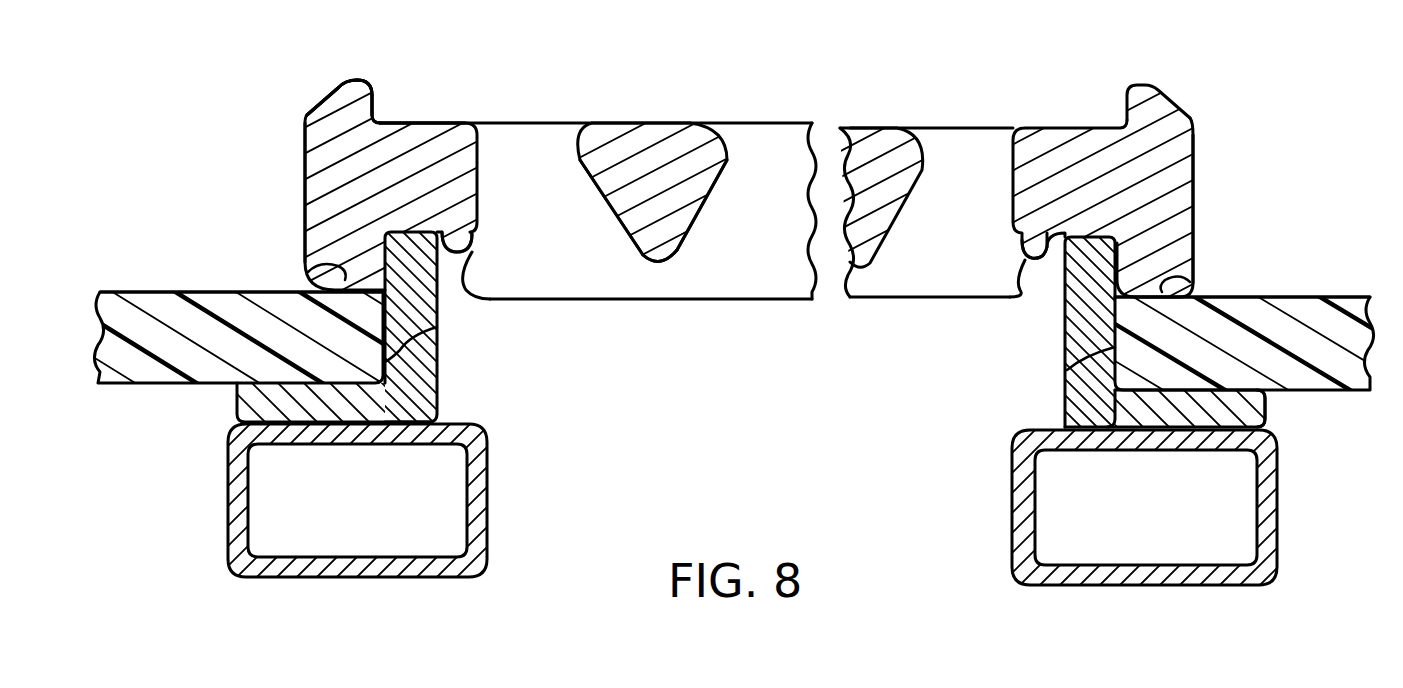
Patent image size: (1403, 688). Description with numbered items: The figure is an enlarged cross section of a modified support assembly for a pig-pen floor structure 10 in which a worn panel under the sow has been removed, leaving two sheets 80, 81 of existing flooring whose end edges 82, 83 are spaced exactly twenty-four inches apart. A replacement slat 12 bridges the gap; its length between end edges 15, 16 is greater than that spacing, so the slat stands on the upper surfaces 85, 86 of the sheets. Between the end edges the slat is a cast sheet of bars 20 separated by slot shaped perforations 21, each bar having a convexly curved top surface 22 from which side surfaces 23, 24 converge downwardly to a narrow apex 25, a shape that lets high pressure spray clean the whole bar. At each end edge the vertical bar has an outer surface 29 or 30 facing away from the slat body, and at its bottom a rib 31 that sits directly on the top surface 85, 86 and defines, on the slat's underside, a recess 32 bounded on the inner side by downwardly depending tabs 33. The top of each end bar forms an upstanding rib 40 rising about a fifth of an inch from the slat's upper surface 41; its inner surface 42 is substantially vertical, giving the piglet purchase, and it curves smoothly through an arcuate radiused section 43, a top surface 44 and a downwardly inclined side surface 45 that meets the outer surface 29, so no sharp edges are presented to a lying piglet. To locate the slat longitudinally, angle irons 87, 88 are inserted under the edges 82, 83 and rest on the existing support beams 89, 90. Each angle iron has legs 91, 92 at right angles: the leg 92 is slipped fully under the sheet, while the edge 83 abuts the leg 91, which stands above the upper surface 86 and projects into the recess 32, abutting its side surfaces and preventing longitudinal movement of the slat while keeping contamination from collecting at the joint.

The floor structure 10 is at (1158, 227).
The slat 12 is at (909, 110).
The end edge 15 is at (298, 193).
The end edge 16 is at (1200, 210).
The bar 20 is at (643, 114).
The slot shaped perforation 21 is at (522, 142).
The top surface 22 is at (657, 122).
The side surface 23 is at (597, 210).
The side surface 24 is at (722, 204).
The apex 25 is at (665, 268).
The outer surface 29 is at (300, 155).
The surface 30 is at (1195, 175).
The rib 31 is at (310, 272).
The recess 32 is at (472, 250).
The tab 33 is at (470, 276).
The upstanding rib 40 is at (350, 74).
The upper surface 41 is at (443, 116).
The inner surface 42 is at (383, 99).
The arcuate radiused section 43 is at (367, 78).
The top surface 44 is at (329, 85).
The downwardly inclined side surface 45 is at (313, 97).
The sheet 80 is at (207, 282).
The sheet 81 is at (1281, 288).
The end edge 82 is at (437, 330).
The end edge 83 is at (1065, 372).
The upper surface 85 is at (165, 284).
The upper surface 86 is at (1310, 296).
The angle iron 87 is at (445, 378).
The angle iron 88 is at (1058, 400).
The support beam 89 is at (496, 494).
The support beam 90 is at (1005, 506).
The leg 91 is at (1065, 350).
The leg 92 is at (1270, 409).